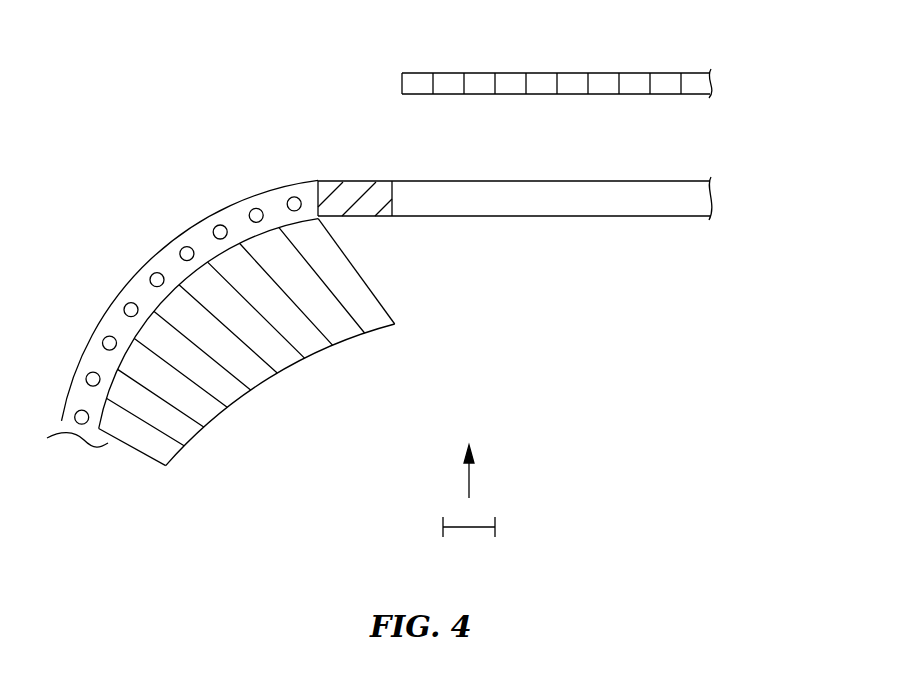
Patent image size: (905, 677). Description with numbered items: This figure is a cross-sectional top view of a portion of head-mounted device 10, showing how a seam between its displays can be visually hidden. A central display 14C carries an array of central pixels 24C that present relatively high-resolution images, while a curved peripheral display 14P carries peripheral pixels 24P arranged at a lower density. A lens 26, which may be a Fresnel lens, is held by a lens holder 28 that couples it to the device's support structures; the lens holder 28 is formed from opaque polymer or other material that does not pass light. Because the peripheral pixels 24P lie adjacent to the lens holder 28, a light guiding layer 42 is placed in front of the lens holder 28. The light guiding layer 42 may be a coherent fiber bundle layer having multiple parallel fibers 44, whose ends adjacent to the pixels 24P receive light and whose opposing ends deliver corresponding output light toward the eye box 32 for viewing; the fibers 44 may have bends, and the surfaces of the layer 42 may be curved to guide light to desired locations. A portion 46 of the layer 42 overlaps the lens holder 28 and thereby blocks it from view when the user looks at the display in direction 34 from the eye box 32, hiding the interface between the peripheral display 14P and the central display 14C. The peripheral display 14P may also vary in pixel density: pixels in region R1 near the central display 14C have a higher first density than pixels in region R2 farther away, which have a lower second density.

The head-mounted device 10 is at (795, 54).
The central display 14C is at (402, 80).
The central pixels 24C is at (484, 82).
The peripheral display 14P is at (76, 437).
The peripheral pixels 24P is at (257, 207).
The lens 26 is at (617, 202).
The lens holder 28 is at (355, 188).
The light guiding layer 42 is at (422, 287).
The fibers 44 is at (322, 307).
The portion of light guiding layer 46 is at (400, 372).
The first region of peripheral display R1 is at (280, 150).
The second region of peripheral display R2 is at (135, 231).
The eye box 32 is at (497, 530).
The viewing direction 34 is at (469, 472).